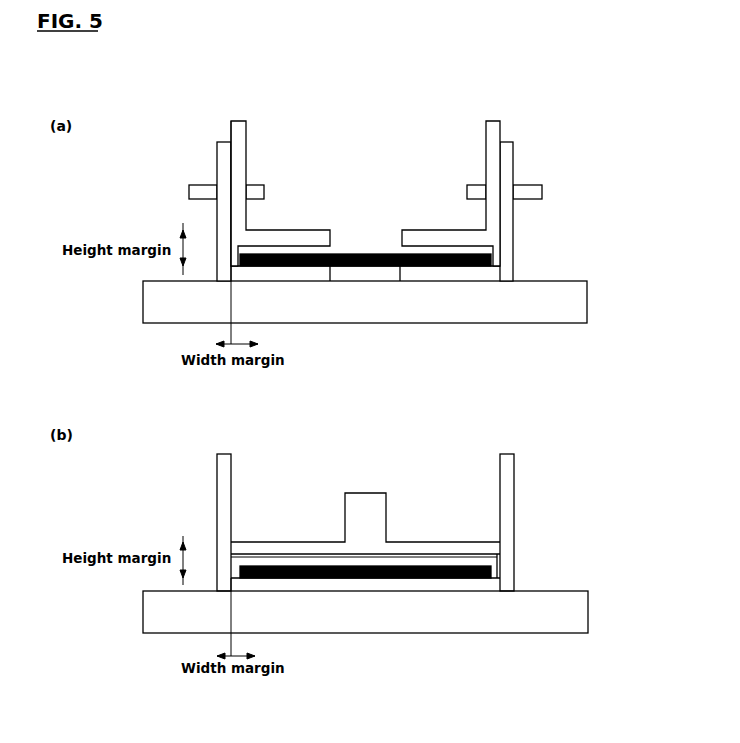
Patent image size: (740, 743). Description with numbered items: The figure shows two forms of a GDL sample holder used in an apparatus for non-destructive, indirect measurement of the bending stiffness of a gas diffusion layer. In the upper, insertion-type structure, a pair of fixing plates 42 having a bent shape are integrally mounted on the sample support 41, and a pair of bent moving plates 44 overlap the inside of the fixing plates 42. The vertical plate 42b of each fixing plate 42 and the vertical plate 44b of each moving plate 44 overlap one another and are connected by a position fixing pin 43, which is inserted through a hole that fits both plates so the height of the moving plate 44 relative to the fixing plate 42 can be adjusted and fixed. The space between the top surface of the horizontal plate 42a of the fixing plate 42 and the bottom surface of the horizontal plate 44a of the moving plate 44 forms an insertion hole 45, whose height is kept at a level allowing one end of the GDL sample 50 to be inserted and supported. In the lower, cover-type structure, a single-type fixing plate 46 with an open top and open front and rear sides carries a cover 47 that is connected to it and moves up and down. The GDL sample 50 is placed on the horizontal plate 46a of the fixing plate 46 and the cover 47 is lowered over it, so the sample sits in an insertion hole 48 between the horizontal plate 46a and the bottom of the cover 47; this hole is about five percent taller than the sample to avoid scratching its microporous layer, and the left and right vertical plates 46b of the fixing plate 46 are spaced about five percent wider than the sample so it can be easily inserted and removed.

The sample support 41 is at (387, 309).
The fixing plate 42 is at (421, 265).
The horizontal plate of the fixing plate 42a is at (450, 274).
The vertical plate of the fixing plate 42b is at (508, 233).
The position fixing pin 43 is at (533, 190).
The moving plate 44 is at (365, 173).
The horizontal plate of the moving plate 44a is at (280, 237).
The vertical plate of the moving plate 44b is at (240, 155).
The insertion hole 45 is at (450, 252).
The fixing plate 46 is at (415, 575).
The horizontal plate of the fixing plate 46a is at (467, 588).
The vertical plates of the fixing plate 46b is at (510, 478).
The cover 47 is at (309, 542).
The insertion hole 48 is at (448, 562).
The GDL sample 50 is at (352, 254).